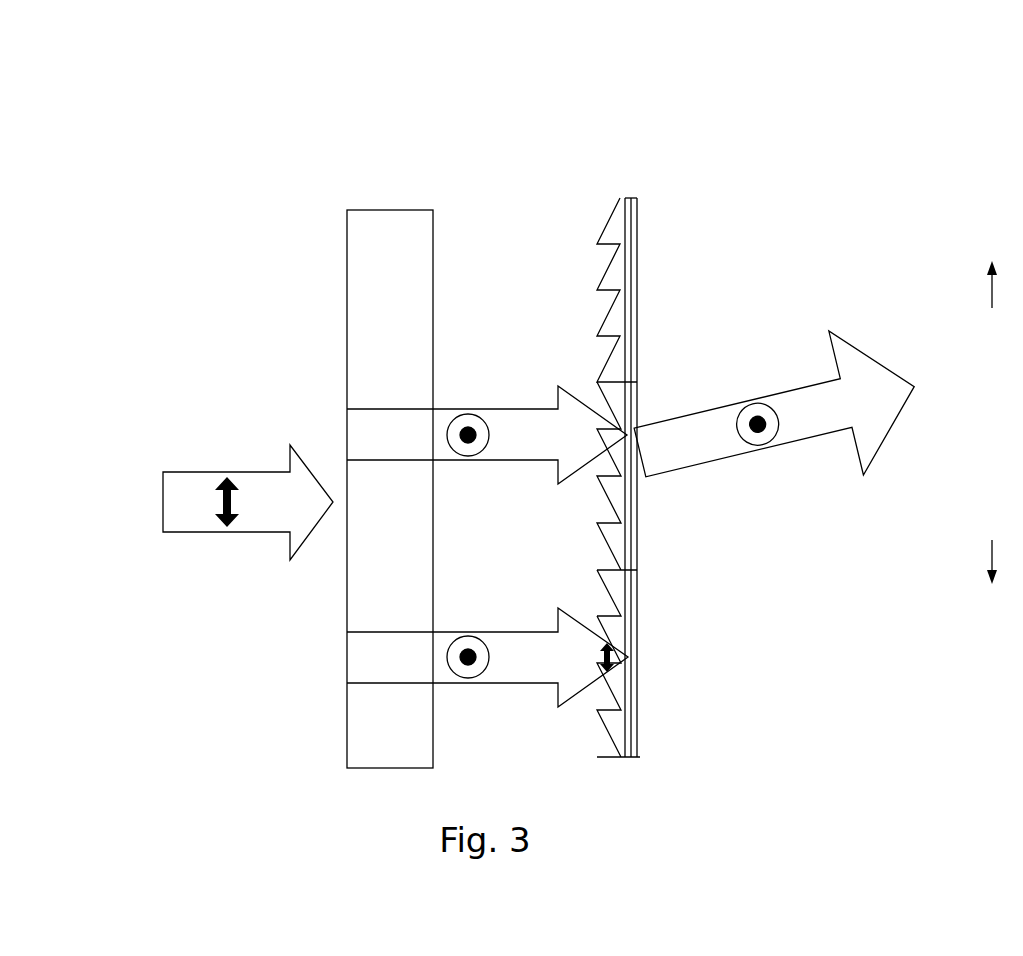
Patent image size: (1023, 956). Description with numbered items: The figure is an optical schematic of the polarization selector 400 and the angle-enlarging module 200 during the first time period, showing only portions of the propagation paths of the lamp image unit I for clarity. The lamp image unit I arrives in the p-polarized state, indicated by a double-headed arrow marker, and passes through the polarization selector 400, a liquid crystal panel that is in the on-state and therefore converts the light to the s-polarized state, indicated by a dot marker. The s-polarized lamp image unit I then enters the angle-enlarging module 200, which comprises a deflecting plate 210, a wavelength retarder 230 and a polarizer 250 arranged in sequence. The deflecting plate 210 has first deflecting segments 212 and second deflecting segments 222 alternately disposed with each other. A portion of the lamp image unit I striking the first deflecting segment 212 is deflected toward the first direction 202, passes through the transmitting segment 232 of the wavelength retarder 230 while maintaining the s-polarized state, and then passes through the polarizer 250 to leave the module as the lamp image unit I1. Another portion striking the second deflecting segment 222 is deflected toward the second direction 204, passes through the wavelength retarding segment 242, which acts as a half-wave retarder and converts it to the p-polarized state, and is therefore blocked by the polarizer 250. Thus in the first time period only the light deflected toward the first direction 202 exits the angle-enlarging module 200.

The angle-enlarging module 200 is at (616, 404).
The deflecting plate 210 is at (615, 218).
The first deflecting segment 212 is at (590, 499).
The second deflecting segment 222 is at (590, 736).
The wavelength retarder 230 is at (679, 451).
The transmitting segment 232 is at (627, 493).
The wavelength retarding segment 242 is at (628, 265).
The polarizer 250 is at (634, 318).
The polarization selector 400 is at (390, 220).
The first direction 202 is at (992, 269).
The second direction 204 is at (992, 580).
The lamp image unit I is at (254, 465).
The lamp image unit I1 is at (950, 399).